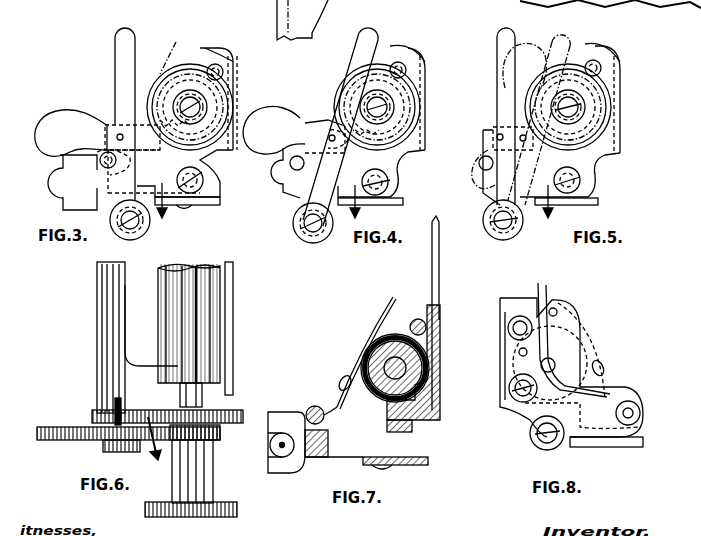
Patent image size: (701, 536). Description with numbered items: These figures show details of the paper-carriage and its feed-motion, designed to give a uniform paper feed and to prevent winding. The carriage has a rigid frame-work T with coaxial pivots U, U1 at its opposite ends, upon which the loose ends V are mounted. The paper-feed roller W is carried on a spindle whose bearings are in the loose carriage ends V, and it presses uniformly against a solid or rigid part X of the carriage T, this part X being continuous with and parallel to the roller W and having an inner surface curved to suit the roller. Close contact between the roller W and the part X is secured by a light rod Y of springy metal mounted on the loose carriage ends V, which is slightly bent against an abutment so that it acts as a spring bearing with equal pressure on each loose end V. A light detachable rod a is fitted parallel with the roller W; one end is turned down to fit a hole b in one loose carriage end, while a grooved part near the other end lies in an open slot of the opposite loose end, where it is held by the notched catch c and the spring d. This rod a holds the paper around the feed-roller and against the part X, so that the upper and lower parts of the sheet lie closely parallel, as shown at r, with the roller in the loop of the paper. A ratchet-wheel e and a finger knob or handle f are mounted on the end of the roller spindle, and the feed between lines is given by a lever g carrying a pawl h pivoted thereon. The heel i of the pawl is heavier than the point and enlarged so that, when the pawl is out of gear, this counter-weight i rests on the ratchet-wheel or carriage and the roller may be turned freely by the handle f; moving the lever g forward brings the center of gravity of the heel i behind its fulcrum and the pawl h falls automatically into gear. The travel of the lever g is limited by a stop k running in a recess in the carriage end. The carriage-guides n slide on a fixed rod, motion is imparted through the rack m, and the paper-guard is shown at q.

In FIG. 3, the rigid part of the carriage X is at (228, 96).
In FIG. 4, the rigid part of the carriage X is at (377, 107).
In FIG. 5, the rigid part of the carriage X is at (568, 107).
In FIG. 6, the rigid part of the carriage X is at (233, 310).
In FIG. 7, the rigid part of the carriage X is at (440, 373).
In FIG. 3, the detachable rod a is at (216, 63).
In FIG. 4, the detachable rod a is at (400, 63).
In FIG. 5, the detachable rod a is at (598, 61).
In FIG. 6, the detachable rod a is at (220, 283).
In FIG. 7, the detachable rod a is at (418, 319).
In FIG. 8, the detachable rod a is at (516, 318).
In FIG. 3, the hole in loose carriage end b is at (223, 64).
In FIG. 4, the hole in loose carriage end b is at (408, 71).
In FIG. 5, the hole in loose carriage end b is at (603, 68).
In FIG. 6, the hole in loose carriage end b is at (222, 432).
In FIG. 3, the ratchet-wheel e is at (184, 136).
In FIG. 4, the ratchet-wheel e is at (368, 140).
In FIG. 5, the ratchet-wheel e is at (560, 138).
In FIG. 6, the ratchet-wheel e is at (208, 441).
In FIG. 3, the finger knob or handle f is at (160, 76).
In FIG. 4, the finger knob or handle f is at (338, 89).
In FIG. 5, the finger knob or handle f is at (533, 86).
In FIG. 6, the finger knob or handle f is at (148, 508).
In FIG. 3, the lever g is at (118, 68).
In FIG. 4, the lever g is at (358, 54).
In FIG. 5, the lever g is at (497, 73).
In FIG. 6, the lever g is at (113, 452).
In FIG. 3, the pawl h is at (138, 154).
In FIG. 4, the pawl h is at (336, 148).
In FIG. 5, the pawl h is at (479, 165).
In FIG. 6, the pawl h is at (158, 438).
In FIG. 3, the heel or counter-weight of the pawl i is at (52, 121).
In FIG. 4, the heel or counter-weight of the pawl i is at (258, 121).
In FIG. 5, the heel or counter-weight of the pawl i is at (530, 63).
In FIG. 6, the heel or counter-weight of the pawl i is at (60, 441).
In FIG. 6, the stop k is at (126, 403).
In FIG. 3, the rack m is at (209, 206).
In FIG. 4, the rack m is at (387, 205).
In FIG. 5, the rack m is at (581, 205).
In FIG. 7, the rack m is at (415, 466).
In FIG. 3, the carriage-guide n is at (64, 163).
In FIG. 6, the carriage-guide n is at (222, 428).
In FIG. 7, the carriage-guide n is at (269, 430).
In FIG. 3, the paper-guard q is at (184, 38).
In FIG. 8, the paper-guard q is at (544, 286).
In FIG. 7, the parallel upper and lower parts of the paper sheet r is at (433, 260).
In FIG. 8, the notched catch c is at (514, 320).
In FIG. 8, the spring d is at (555, 308).
In FIG. 3, the rigid frame-work of the carriage T is at (233, 152).
In FIG. 4, the rigid frame-work of the carriage T is at (290, 164).
In FIG. 5, the rigid frame-work of the carriage T is at (546, 125).
In FIG. 6, the rigid frame-work of the carriage T is at (121, 285).
In FIG. 7, the rigid frame-work of the carriage T is at (398, 425).
In FIG. 8, the rigid frame-work of the carriage T is at (593, 446).
In FIG. 8, the pivot U is at (530, 438).
In FIG. 3, the pivot U1 is at (204, 181).
In FIG. 4, the pivot U1 is at (388, 181).
In FIG. 5, the pivot U1 is at (580, 180).
In FIG. 3, the loose carriage end V is at (162, 207).
In FIG. 4, the loose carriage end V is at (355, 208).
In FIG. 5, the loose carriage end V is at (548, 208).
In FIG. 8, the loose carriage end V is at (575, 346).
In FIG. 7, the paper-feed roller W is at (398, 344).
In FIG. 6, the light rod Y is at (100, 304).
In FIG. 7, the light rod Y is at (310, 408).
In FIG. 8, the light rod Y is at (632, 403).